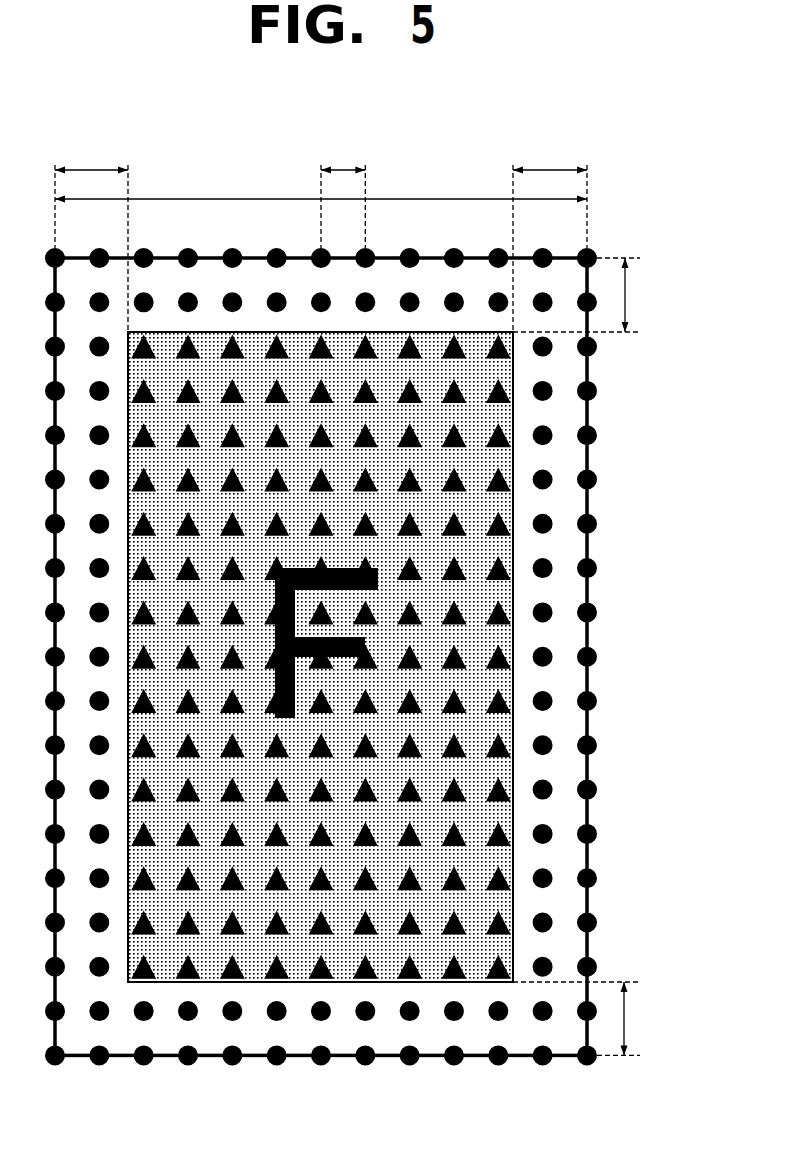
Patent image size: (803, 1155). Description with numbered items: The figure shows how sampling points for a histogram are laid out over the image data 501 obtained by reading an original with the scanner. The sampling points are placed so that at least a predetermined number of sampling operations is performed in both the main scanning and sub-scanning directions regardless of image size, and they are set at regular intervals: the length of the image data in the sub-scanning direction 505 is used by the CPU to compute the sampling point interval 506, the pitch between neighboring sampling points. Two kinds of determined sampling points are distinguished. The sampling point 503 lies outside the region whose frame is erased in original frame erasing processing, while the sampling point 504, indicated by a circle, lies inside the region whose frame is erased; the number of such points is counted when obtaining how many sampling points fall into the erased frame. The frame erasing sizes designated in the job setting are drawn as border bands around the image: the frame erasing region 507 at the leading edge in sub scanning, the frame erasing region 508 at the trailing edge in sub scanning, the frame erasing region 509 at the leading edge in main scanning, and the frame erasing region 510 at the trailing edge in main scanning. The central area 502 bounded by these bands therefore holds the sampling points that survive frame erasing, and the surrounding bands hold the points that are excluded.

The image data 501 is at (587, 447).
The second region (inner triangle-pattern region) 502 is at (513, 500).
The sampling point 503 is at (500, 615).
The sampling point 504 is at (597, 657).
The length of the image data in the sub-scanning direction 505 is at (238, 199).
The sampling point interval 506 is at (343, 170).
The frame erasing region at the sub-scanning leading edge 507 is at (92, 170).
The frame erasing region at the sub-scanning trailing edge 508 is at (548, 170).
The frame erasing region at the main scanning leading edge 509 is at (627, 294).
The frame erasing region at the main scanning trailing edge 510 is at (626, 1020).